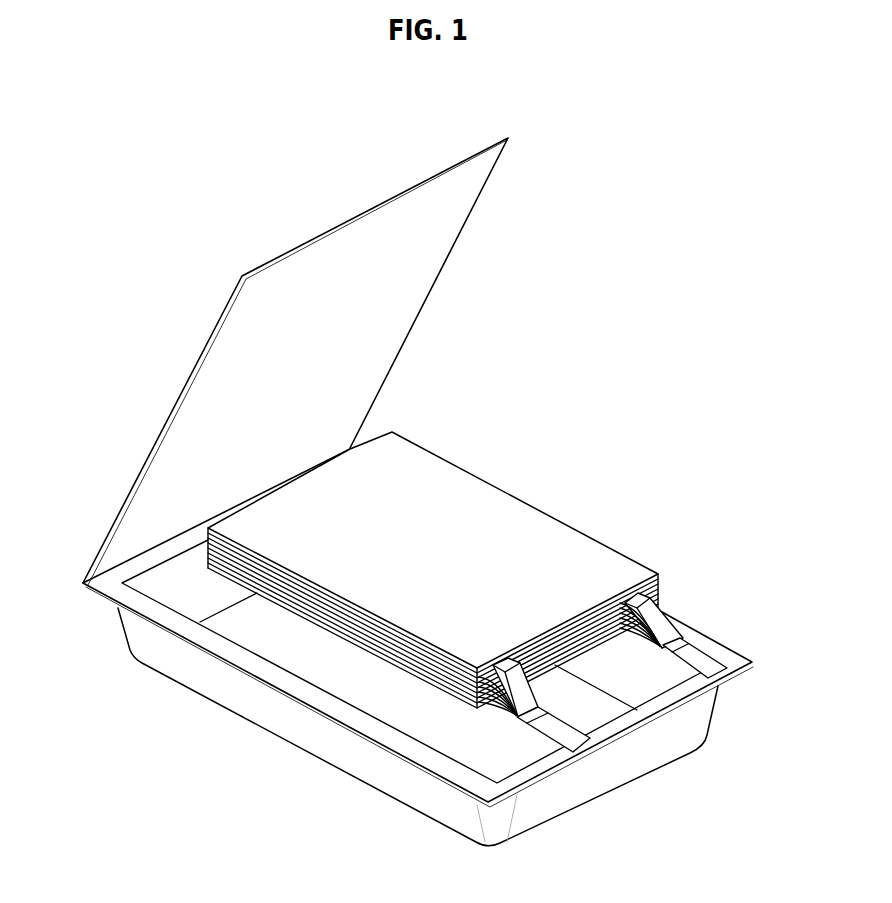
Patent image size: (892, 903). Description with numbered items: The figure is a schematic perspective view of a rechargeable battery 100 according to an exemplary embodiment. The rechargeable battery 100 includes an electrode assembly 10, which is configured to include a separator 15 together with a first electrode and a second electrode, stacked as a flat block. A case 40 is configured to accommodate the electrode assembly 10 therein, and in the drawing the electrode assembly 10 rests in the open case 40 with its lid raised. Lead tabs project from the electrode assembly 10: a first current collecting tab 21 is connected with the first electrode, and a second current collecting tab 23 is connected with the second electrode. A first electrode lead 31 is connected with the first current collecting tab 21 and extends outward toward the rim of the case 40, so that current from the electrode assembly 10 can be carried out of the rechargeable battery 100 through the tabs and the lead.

The rechargeable battery 100 is at (437, 511).
The electrode assembly 10 is at (499, 658).
The separator 15 is at (503, 498).
The first current collecting tab 21 is at (517, 708).
The second current collecting tab 23 is at (653, 614).
The first electrode lead 31 is at (717, 660).
The case 40 is at (235, 693).